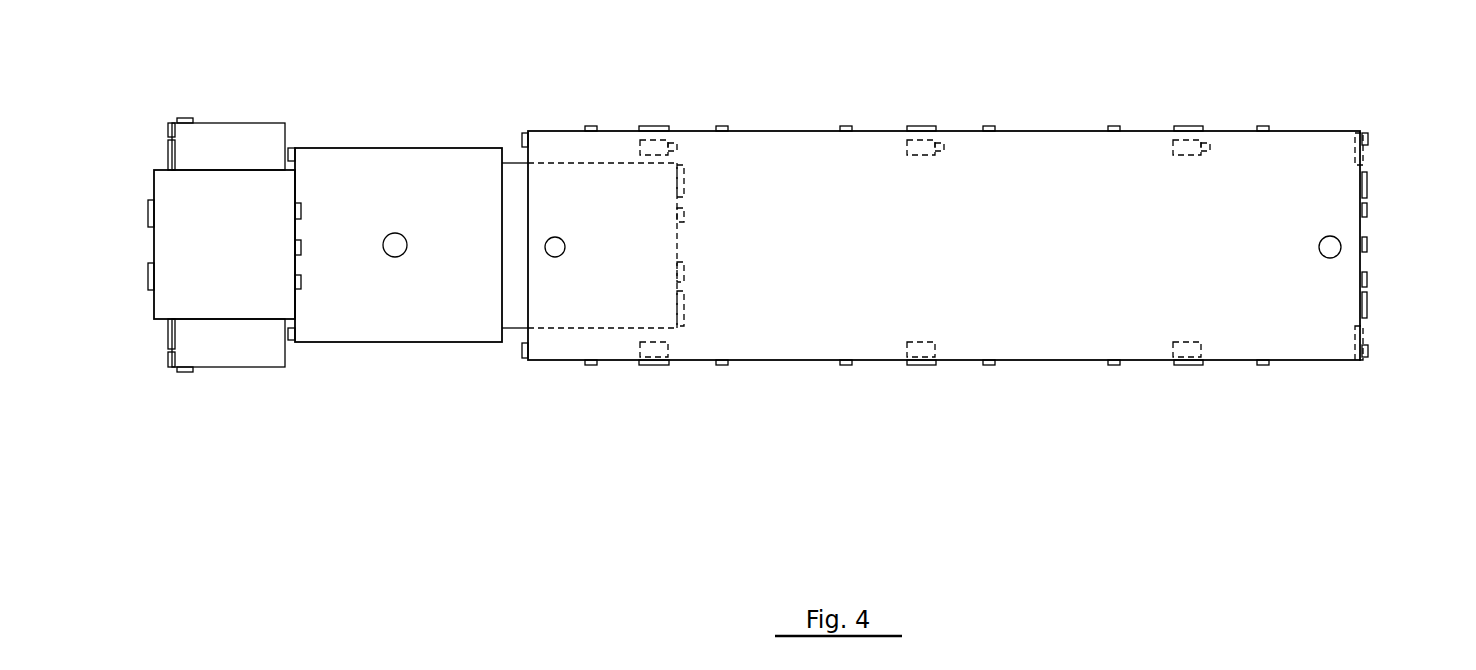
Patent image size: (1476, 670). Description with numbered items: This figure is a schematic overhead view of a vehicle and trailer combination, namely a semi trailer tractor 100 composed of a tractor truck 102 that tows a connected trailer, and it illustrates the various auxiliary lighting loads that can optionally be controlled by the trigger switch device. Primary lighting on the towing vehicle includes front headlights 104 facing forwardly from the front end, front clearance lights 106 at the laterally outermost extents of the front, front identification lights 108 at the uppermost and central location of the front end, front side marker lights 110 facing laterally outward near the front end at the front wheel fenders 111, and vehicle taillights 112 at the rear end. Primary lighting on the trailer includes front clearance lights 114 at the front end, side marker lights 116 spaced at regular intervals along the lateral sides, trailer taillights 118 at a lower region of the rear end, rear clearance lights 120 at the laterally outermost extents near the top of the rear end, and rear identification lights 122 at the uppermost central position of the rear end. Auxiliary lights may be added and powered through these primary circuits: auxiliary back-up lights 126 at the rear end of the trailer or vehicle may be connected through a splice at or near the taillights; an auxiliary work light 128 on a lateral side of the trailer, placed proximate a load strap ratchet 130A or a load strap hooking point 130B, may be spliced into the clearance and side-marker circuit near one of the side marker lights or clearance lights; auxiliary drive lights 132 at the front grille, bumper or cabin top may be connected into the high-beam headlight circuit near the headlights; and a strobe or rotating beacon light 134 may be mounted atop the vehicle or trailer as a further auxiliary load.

The semi trailer tractor 100 is at (380, 170).
The tractor truck 102 is at (1060, 118).
The front headlights 104 is at (168, 151).
The front clearance lights 106 is at (168, 124).
The front identification lights 108 is at (297, 208).
The front side marker lights 110 is at (190, 118).
The front wheel fenders 111 is at (268, 128).
The vehicle taillights 112 is at (684, 180).
The front clearance lights 114 is at (522, 139).
The side marker lights 116 is at (597, 125).
The trailer taillights 118 is at (1362, 160).
The rear clearance lights 120 is at (1368, 138).
The rear identification lights 122 is at (1367, 280).
The auxiliary back-up lights 126 is at (684, 215).
The auxiliary work light 128 is at (663, 125).
The load strap ratchet 130A is at (652, 150).
The load strap hooking point 130B is at (657, 347).
The auxiliary drive lights 132 is at (148, 275).
The strobe or rotating beacon light 134 is at (400, 252).